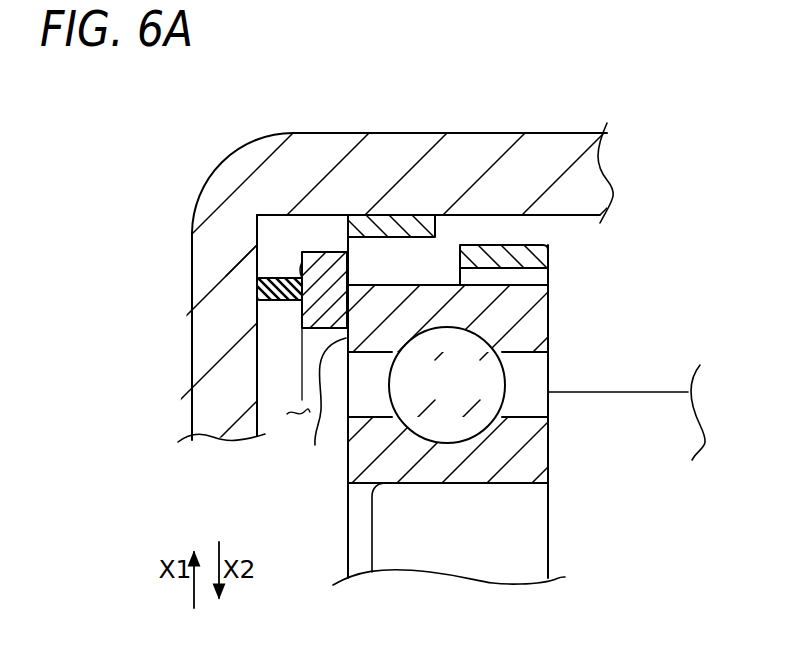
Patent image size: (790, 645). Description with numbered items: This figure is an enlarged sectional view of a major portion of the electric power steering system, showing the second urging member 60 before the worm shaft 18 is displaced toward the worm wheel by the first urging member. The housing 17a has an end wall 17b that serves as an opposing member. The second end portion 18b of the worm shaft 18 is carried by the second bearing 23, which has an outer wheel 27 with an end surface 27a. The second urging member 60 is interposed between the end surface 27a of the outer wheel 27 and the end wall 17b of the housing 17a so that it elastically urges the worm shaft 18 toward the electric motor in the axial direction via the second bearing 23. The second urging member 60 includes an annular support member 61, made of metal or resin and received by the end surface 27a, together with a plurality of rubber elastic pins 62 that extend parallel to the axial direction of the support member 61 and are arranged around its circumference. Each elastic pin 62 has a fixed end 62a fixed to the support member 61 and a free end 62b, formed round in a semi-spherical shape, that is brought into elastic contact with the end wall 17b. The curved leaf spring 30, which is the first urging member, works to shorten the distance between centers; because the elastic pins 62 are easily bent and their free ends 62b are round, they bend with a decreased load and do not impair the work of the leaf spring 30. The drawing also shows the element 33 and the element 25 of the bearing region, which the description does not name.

The housing 17a is at (490, 133).
The end wall 17b is at (204, 405).
The worm shaft 18 is at (649, 407).
The second end portion 18b is at (453, 560).
The second bearing 23 is at (516, 380).
The inner ring 25 is at (530, 463).
The outer wheel 27 is at (530, 298).
The end surface 27a is at (317, 408).
The curved leaf spring 30 is at (382, 203).
The seal ring 33 is at (418, 228).
The second urging member 60 is at (280, 312).
The support member 61 is at (323, 268).
The elastic pin 62 is at (282, 277).
The fixed end 62a is at (306, 276).
The free end 62b is at (256, 290).